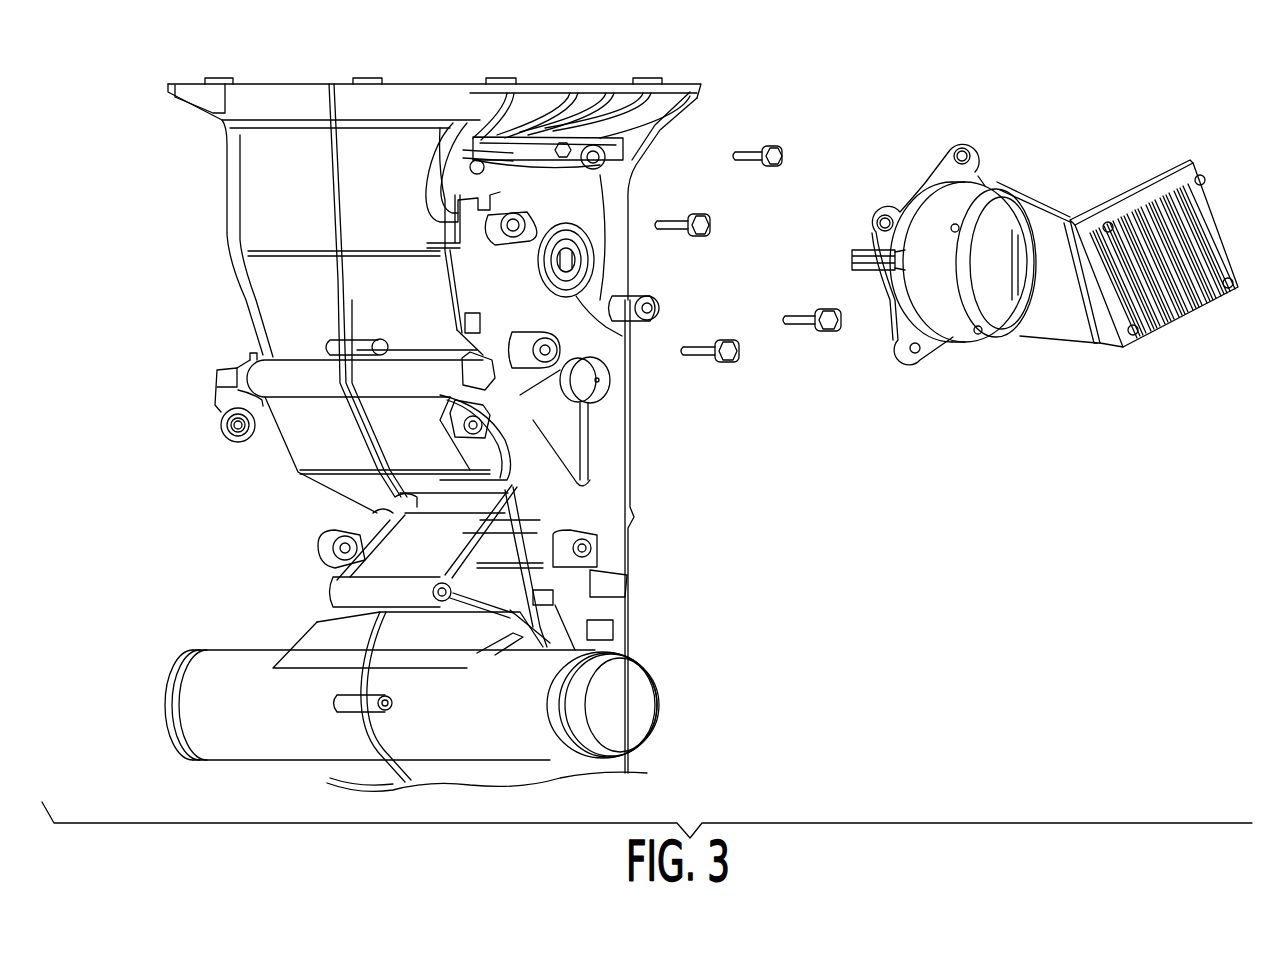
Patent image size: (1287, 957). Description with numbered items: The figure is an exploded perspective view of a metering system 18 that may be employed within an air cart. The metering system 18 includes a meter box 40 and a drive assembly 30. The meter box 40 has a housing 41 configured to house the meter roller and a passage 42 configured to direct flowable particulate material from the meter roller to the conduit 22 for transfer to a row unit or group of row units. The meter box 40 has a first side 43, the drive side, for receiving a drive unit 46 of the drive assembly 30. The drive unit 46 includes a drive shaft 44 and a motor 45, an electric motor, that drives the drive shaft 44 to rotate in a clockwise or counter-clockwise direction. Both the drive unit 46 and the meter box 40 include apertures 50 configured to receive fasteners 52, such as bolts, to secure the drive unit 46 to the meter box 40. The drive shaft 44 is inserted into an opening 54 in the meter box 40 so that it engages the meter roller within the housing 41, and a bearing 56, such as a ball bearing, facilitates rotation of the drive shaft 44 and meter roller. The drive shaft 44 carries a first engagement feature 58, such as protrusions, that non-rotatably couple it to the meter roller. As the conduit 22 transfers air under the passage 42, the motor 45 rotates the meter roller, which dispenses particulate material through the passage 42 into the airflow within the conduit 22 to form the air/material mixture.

The metering system 18 is at (907, 117).
The conduit 22 is at (540, 740).
The drive assembly 30 is at (866, 392).
The meter box 40 is at (285, 73).
The housing 41 is at (393, 173).
The passage 42 is at (607, 475).
The first side 43 is at (660, 440).
The drive shaft 44 is at (852, 257).
The motor 45 is at (1057, 318).
The drive unit 46 is at (1013, 358).
The apertures 50 is at (523, 217).
The fasteners 52 is at (683, 207).
The opening 54 is at (585, 256).
The bearing 56 is at (578, 298).
The first engagement feature 58 is at (877, 272).